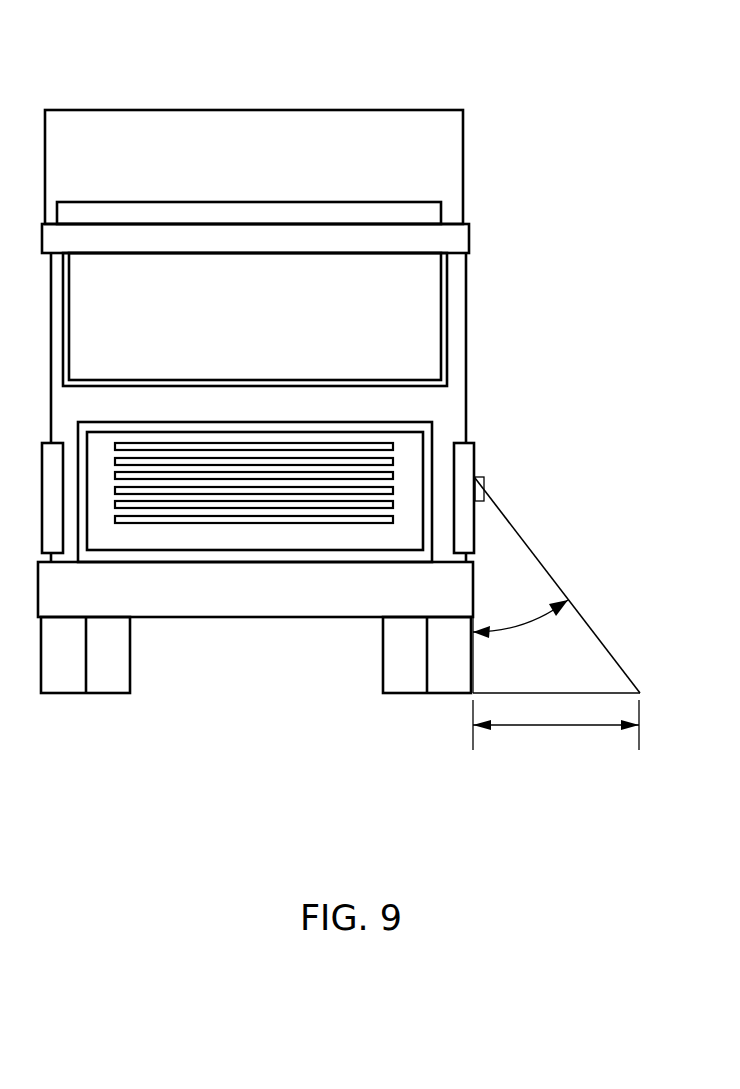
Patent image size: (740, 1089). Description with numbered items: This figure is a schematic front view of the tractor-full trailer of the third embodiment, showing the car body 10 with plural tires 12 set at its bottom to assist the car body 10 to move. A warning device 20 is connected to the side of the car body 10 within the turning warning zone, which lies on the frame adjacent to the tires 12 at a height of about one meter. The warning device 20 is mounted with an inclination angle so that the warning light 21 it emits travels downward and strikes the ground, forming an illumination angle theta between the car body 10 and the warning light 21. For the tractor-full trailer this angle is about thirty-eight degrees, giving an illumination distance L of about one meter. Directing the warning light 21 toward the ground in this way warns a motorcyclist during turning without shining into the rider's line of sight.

The car body 10 is at (363, 110).
The tires 12 is at (63, 685).
The warning device 20 is at (478, 475).
The warning light 21 is at (592, 644).